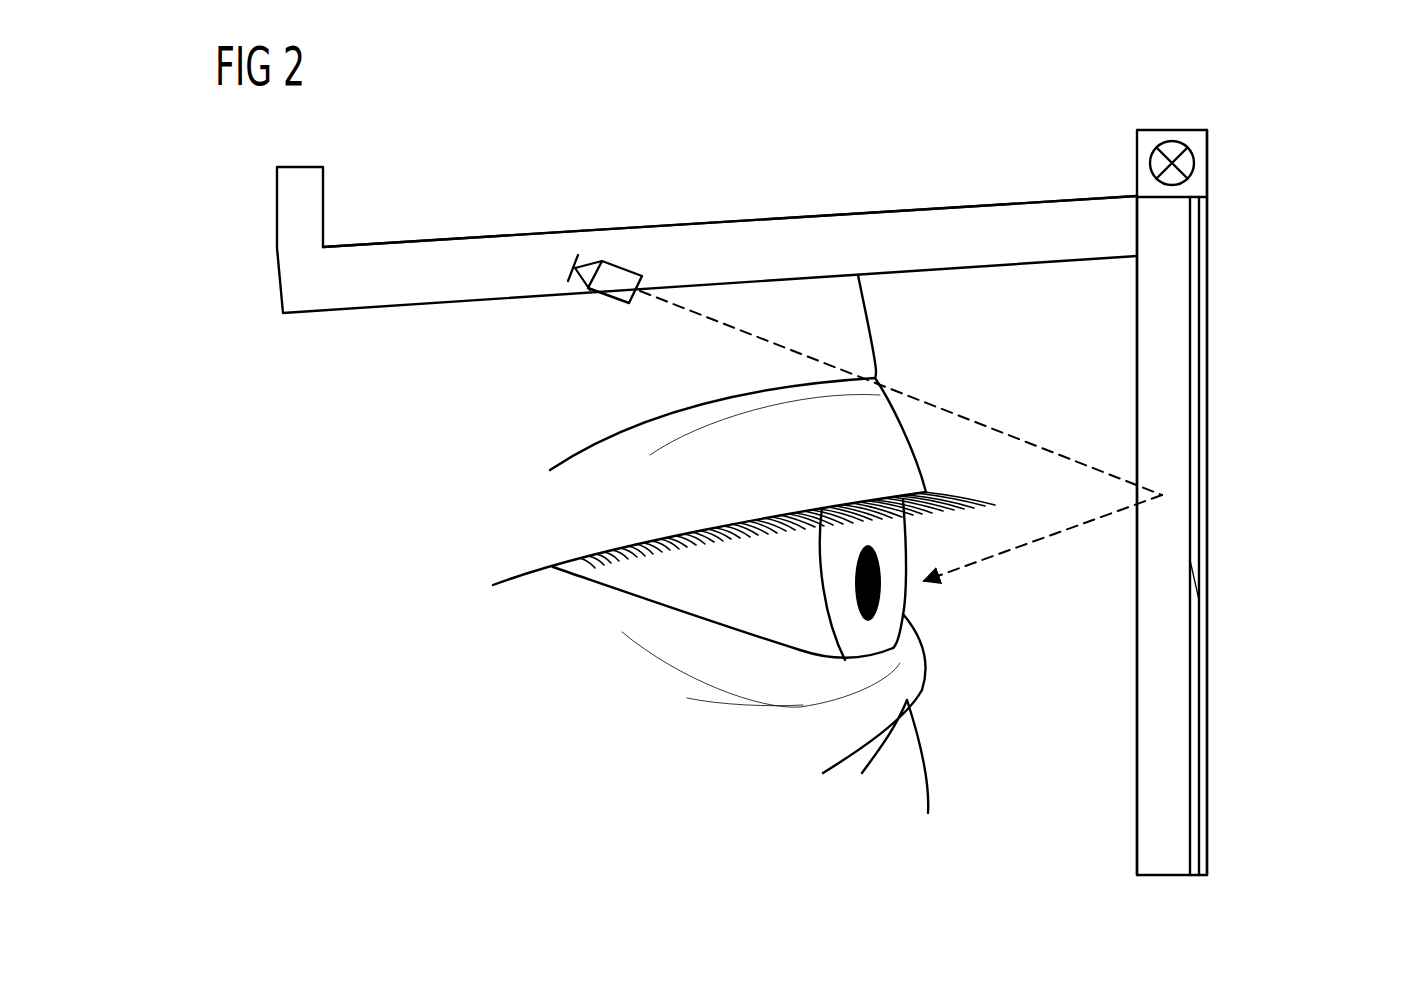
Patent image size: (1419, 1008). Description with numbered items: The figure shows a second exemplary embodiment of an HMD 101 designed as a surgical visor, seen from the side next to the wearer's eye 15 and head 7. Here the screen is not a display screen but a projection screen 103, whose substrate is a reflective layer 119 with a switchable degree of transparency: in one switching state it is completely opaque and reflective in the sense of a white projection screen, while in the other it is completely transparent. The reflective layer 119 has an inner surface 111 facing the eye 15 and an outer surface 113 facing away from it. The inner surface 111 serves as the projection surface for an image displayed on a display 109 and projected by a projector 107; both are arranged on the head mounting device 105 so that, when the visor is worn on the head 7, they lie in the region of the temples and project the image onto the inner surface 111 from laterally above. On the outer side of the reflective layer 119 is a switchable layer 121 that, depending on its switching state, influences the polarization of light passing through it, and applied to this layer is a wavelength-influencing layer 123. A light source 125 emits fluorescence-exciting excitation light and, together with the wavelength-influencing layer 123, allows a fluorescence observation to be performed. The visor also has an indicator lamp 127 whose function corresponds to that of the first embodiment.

The HMD 101 is at (821, 166).
The projection screen 103 is at (1272, 477).
The head mounting device 105 is at (716, 237).
The projector 107 is at (628, 262).
The display 109 is at (572, 254).
The inner surface 111 is at (1136, 628).
The outer surface 113 is at (1195, 583).
The reflective layer 119 is at (1148, 418).
The switchable layer 121 is at (1196, 340).
The wavelength-influencing layer 123 is at (1205, 287).
The light source 125 is at (1172, 140).
The indicator lamp 127 is at (288, 203).
The head 7 is at (852, 312).
The eye 15 is at (893, 598).